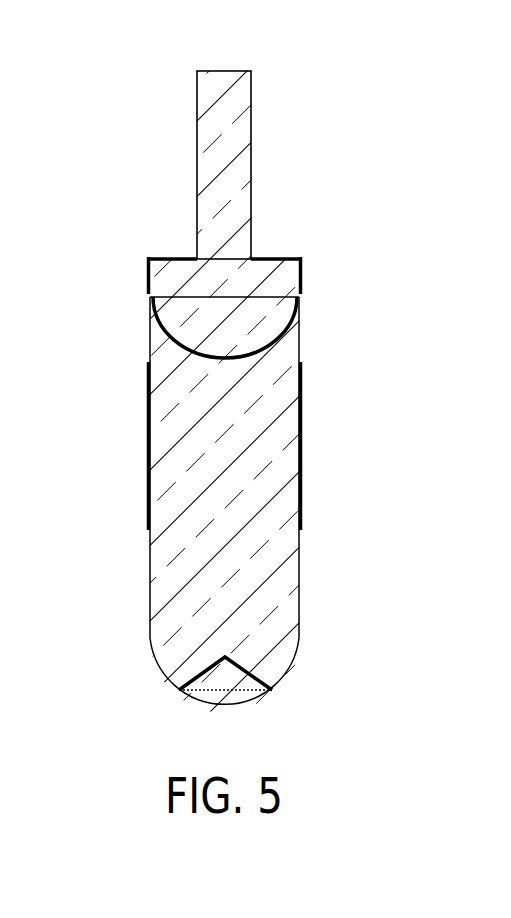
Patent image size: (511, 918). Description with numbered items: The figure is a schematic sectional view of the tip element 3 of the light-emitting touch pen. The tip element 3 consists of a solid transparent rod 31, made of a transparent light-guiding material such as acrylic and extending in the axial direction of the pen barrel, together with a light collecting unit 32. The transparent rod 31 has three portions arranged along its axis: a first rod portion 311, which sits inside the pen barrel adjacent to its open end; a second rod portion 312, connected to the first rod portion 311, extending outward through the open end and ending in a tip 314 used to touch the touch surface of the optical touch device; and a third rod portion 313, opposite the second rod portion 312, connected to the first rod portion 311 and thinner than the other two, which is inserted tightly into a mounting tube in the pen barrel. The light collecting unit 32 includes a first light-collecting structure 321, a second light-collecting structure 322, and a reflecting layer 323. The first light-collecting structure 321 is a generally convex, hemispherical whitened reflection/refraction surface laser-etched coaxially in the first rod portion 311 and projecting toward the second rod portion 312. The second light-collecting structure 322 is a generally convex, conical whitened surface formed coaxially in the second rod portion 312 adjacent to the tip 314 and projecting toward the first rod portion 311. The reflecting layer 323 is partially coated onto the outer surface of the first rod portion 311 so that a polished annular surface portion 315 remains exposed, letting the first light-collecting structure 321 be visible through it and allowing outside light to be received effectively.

The tip element 3 is at (321, 140).
The transparent rod 31 is at (215, 409).
The first rod portion 311 is at (210, 452).
The second rod portion 312 is at (185, 598).
The third rod portion 313 is at (221, 177).
The tip 314 is at (220, 712).
The annular surface portion 315 is at (297, 327).
The light collecting unit 32 is at (285, 525).
The first light-collecting structure 321 is at (246, 360).
The second light-collecting structure 322 is at (271, 636).
The reflecting layer 323 is at (302, 462).